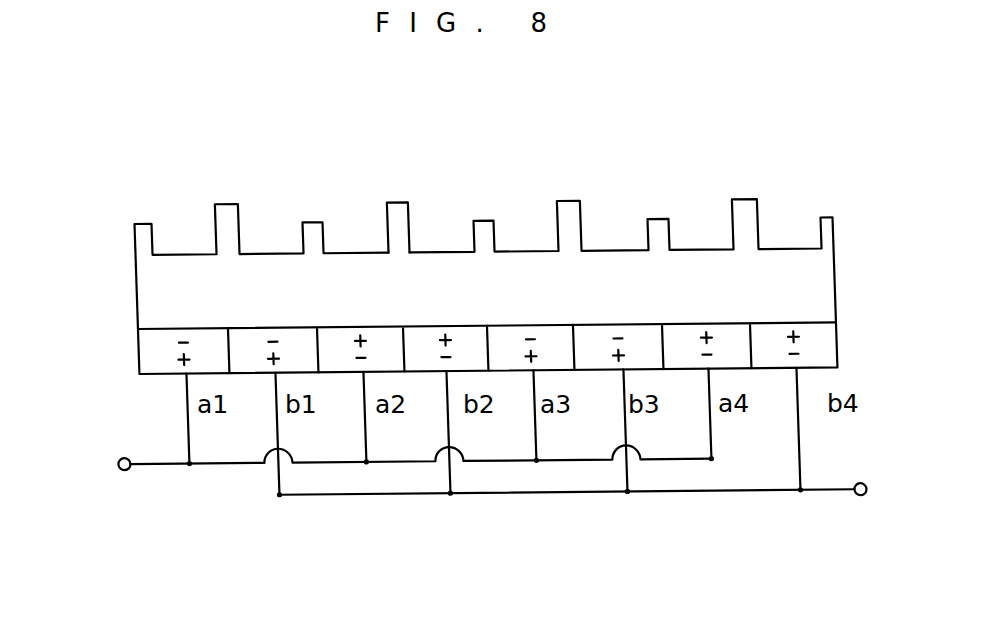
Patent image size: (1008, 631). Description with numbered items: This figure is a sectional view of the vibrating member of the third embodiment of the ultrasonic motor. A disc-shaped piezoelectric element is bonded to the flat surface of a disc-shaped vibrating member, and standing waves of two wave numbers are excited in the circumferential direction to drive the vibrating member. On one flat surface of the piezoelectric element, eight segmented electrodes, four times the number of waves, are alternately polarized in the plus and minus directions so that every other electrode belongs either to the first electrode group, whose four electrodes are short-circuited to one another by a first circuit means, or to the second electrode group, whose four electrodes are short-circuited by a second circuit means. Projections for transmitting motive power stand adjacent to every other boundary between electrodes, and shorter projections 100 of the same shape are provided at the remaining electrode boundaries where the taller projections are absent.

The shorter projections 100 is at (488, 289).